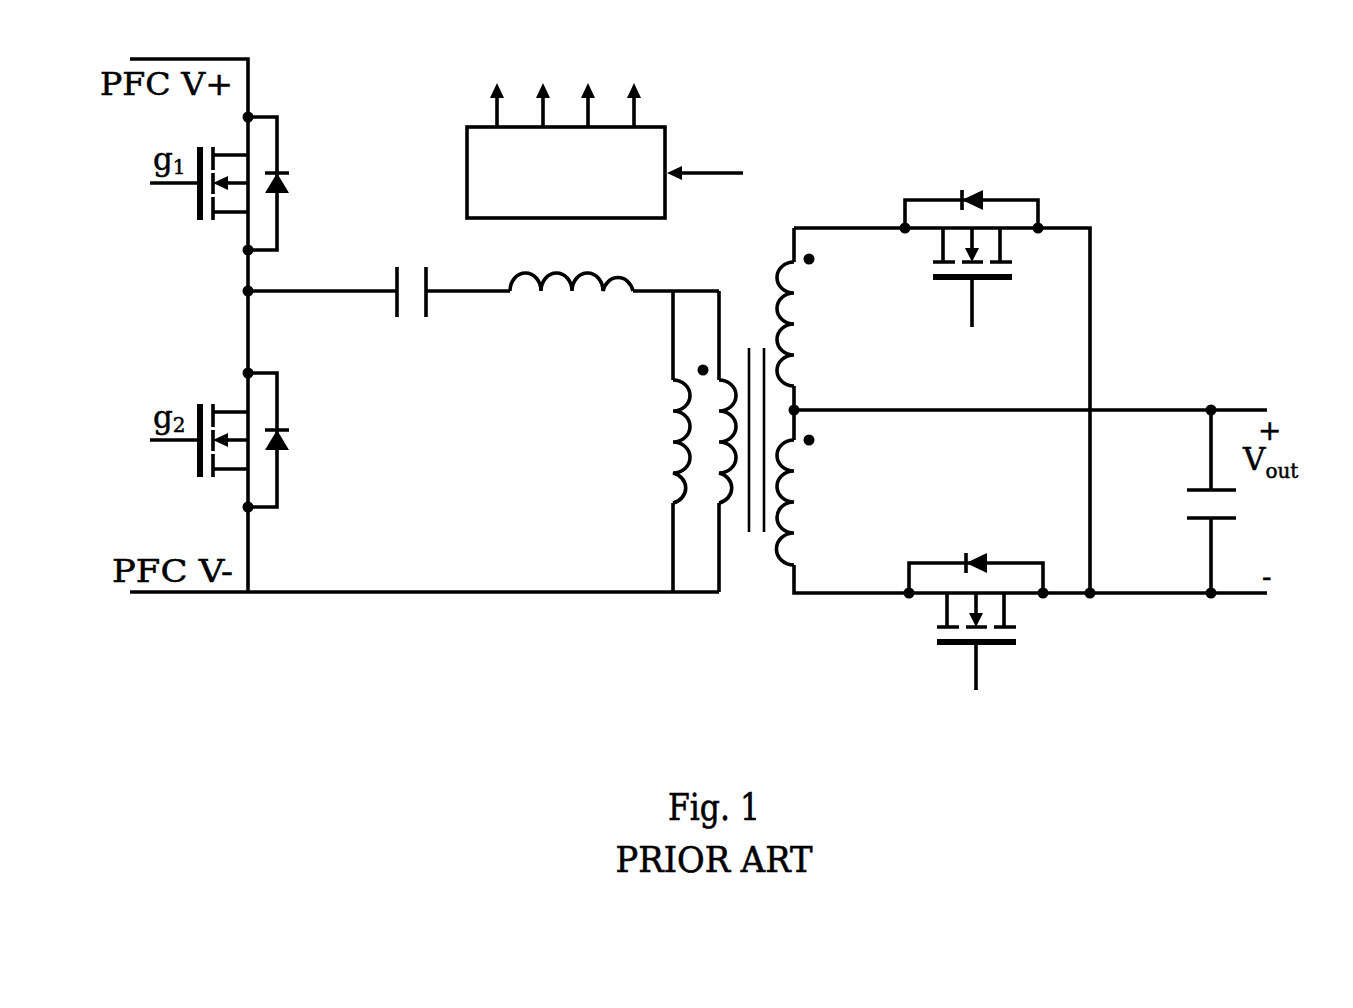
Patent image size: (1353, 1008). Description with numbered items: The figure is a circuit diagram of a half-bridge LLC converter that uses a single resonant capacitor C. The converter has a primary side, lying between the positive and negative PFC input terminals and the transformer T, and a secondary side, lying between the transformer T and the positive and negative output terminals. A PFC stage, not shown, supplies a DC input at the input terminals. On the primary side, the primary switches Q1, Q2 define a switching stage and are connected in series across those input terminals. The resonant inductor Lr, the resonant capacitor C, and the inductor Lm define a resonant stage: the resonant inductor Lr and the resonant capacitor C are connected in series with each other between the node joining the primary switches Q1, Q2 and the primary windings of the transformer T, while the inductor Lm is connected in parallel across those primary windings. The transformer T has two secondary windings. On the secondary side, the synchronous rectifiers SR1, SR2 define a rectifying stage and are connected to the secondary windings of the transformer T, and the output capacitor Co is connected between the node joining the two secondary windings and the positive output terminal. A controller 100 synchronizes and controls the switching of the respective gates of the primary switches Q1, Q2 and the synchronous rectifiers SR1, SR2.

The controller 100 is at (665, 127).
The primary switch Q1 is at (237, 171).
The primary switch Q2 is at (237, 434).
The synchronous rectifier SR1 is at (937, 255).
The synchronous rectifier SR2 is at (939, 617).
The resonant capacitor C is at (411, 273).
The resonant inductor Lr is at (571, 262).
The inductor Lm is at (654, 433).
The transformer T is at (756, 408).
The output capacitor Co is at (1195, 501).